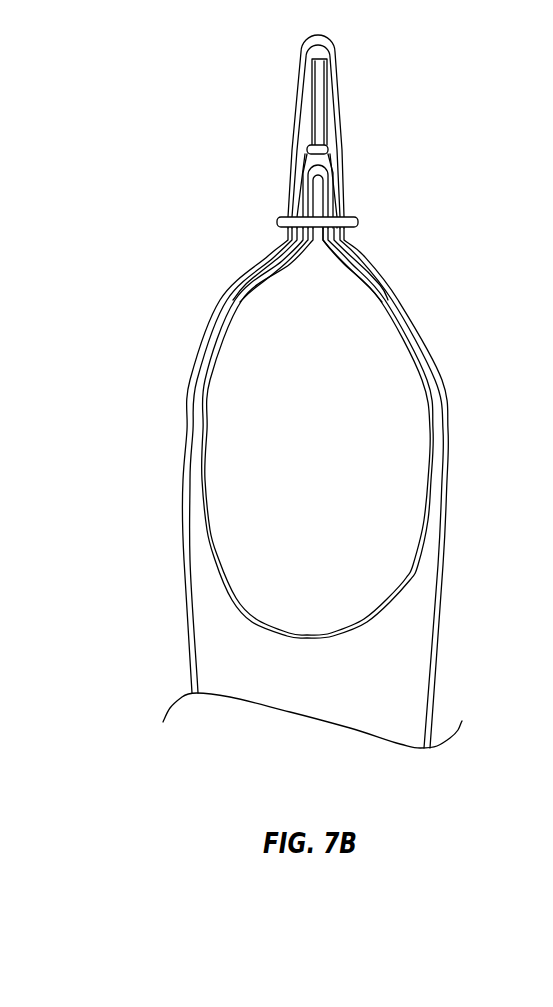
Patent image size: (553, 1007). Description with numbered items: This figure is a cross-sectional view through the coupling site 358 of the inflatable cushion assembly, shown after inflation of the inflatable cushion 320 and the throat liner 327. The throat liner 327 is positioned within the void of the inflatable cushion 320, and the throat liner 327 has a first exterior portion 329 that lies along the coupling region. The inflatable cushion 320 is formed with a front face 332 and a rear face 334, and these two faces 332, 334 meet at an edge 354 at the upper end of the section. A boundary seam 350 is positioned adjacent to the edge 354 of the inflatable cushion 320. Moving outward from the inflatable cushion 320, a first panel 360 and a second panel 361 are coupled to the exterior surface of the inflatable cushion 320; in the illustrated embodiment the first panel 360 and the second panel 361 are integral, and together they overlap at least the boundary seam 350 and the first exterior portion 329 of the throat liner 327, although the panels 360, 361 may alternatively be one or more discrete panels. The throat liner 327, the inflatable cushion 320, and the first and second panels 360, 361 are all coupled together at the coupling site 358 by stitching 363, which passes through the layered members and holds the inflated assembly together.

The inflatable cushion 320 is at (470, 671).
The throat liner 327 is at (413, 565).
The first exterior portion 329 is at (322, 190).
The front face 332 is at (448, 426).
The rear face 334 is at (198, 364).
The boundary seam 350 is at (328, 149).
The edge 354 is at (327, 47).
The coupling site 358 is at (388, 95).
The first panel 360 is at (343, 202).
The second panel 361 is at (297, 142).
The stitching 363 is at (357, 221).